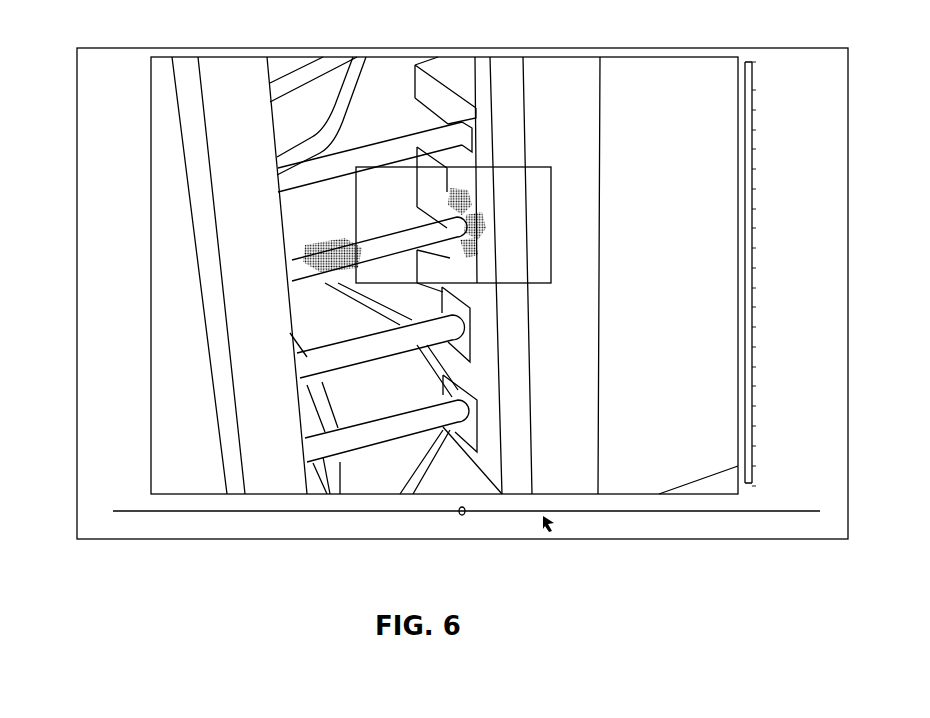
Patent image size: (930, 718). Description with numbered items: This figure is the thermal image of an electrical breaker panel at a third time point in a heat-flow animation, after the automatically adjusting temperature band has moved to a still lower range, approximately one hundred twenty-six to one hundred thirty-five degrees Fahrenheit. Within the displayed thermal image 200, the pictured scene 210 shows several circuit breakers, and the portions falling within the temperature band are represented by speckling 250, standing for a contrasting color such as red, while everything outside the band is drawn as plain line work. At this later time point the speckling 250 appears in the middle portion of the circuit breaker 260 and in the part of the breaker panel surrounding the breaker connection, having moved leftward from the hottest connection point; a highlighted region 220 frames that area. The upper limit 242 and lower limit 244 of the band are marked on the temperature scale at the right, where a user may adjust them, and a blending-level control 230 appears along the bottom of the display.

The thermal imaging display system 200 is at (62, 135).
The image display region 210 is at (700, 57).
The selection box 220 is at (540, 167).
The blending level slider 230 is at (548, 527).
The upper limit 242 is at (746, 322).
The lower limit 244 is at (746, 353).
The speckling 250 is at (335, 245).
The circuit breaker 260 is at (300, 272).